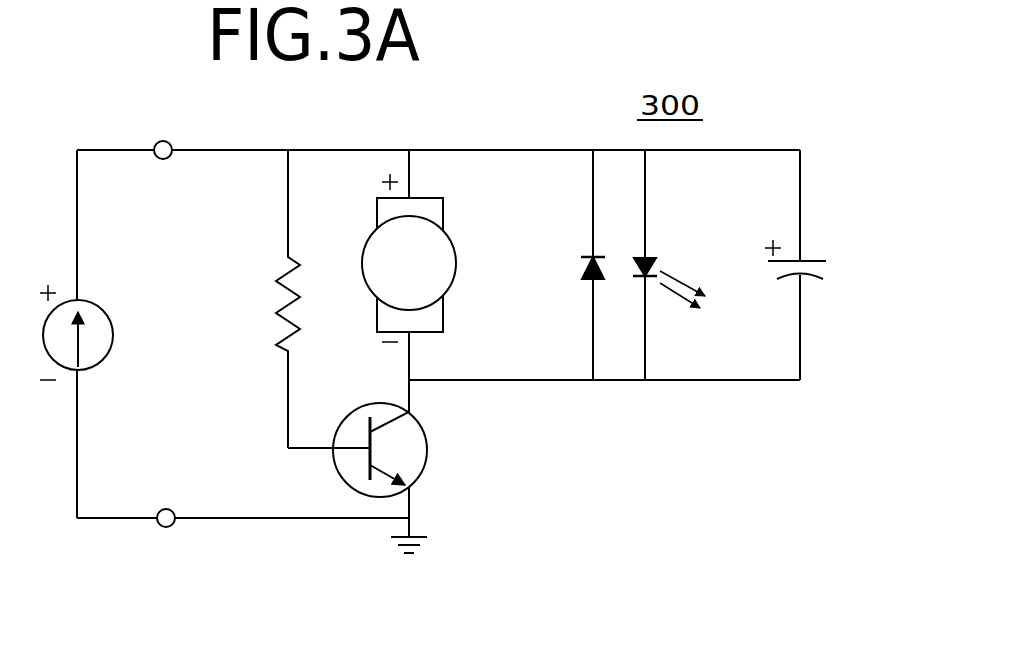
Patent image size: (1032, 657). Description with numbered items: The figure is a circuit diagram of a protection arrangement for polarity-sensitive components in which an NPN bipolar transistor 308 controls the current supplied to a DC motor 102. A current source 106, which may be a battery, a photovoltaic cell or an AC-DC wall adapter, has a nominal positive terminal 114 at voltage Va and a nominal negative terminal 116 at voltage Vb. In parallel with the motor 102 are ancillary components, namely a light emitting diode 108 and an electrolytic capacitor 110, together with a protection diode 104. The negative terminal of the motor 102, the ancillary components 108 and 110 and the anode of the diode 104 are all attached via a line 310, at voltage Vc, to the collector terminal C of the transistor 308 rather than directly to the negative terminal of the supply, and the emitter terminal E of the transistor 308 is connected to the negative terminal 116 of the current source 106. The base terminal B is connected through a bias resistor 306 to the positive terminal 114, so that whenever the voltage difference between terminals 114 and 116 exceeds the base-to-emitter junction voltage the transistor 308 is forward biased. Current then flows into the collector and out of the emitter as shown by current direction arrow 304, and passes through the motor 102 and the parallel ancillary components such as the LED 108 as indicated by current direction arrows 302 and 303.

The DC motor 102 is at (445, 210).
The diode 104 is at (598, 283).
The current source 106 is at (85, 368).
The light emitting diode 108 is at (655, 262).
The electrolytic capacitor 110 is at (808, 262).
The nominal positive terminal 114 is at (163, 141).
The nominal negative terminal 116 is at (166, 528).
The current direction arrow 302 is at (372, 188).
The current direction arrow 303 is at (638, 188).
The current direction arrow 304 is at (350, 505).
The bias resistor 306 is at (285, 320).
The NPN bipolar transistor 308 is at (425, 432).
The line 310 is at (612, 382).